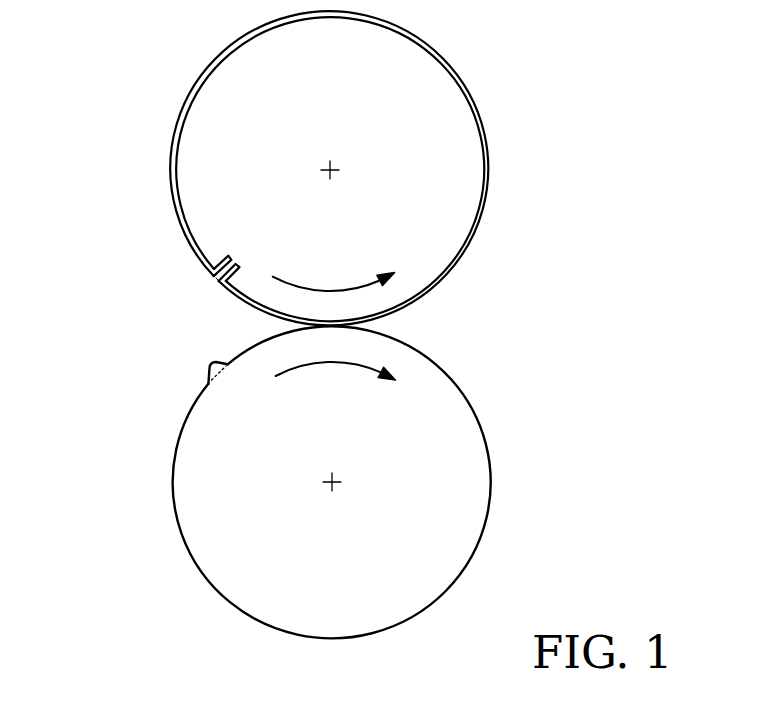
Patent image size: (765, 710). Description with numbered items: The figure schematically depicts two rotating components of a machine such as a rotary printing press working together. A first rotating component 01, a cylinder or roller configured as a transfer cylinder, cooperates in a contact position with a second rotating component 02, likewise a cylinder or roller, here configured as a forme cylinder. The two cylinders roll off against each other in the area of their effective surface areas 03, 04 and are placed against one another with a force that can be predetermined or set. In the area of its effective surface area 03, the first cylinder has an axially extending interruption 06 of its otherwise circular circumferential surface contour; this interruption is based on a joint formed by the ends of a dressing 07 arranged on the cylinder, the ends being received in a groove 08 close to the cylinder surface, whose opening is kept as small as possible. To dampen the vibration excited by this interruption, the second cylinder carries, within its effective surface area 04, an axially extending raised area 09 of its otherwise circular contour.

The first rotating component 01 is at (200, 119).
The second rotating component 02 is at (187, 449).
The effective surface area 03 is at (487, 141).
The effective surface area 04 is at (480, 422).
The interruption 06 is at (214, 282).
The dressing 07 is at (470, 241).
The groove 08 is at (234, 261).
The raised area 09 is at (204, 362).